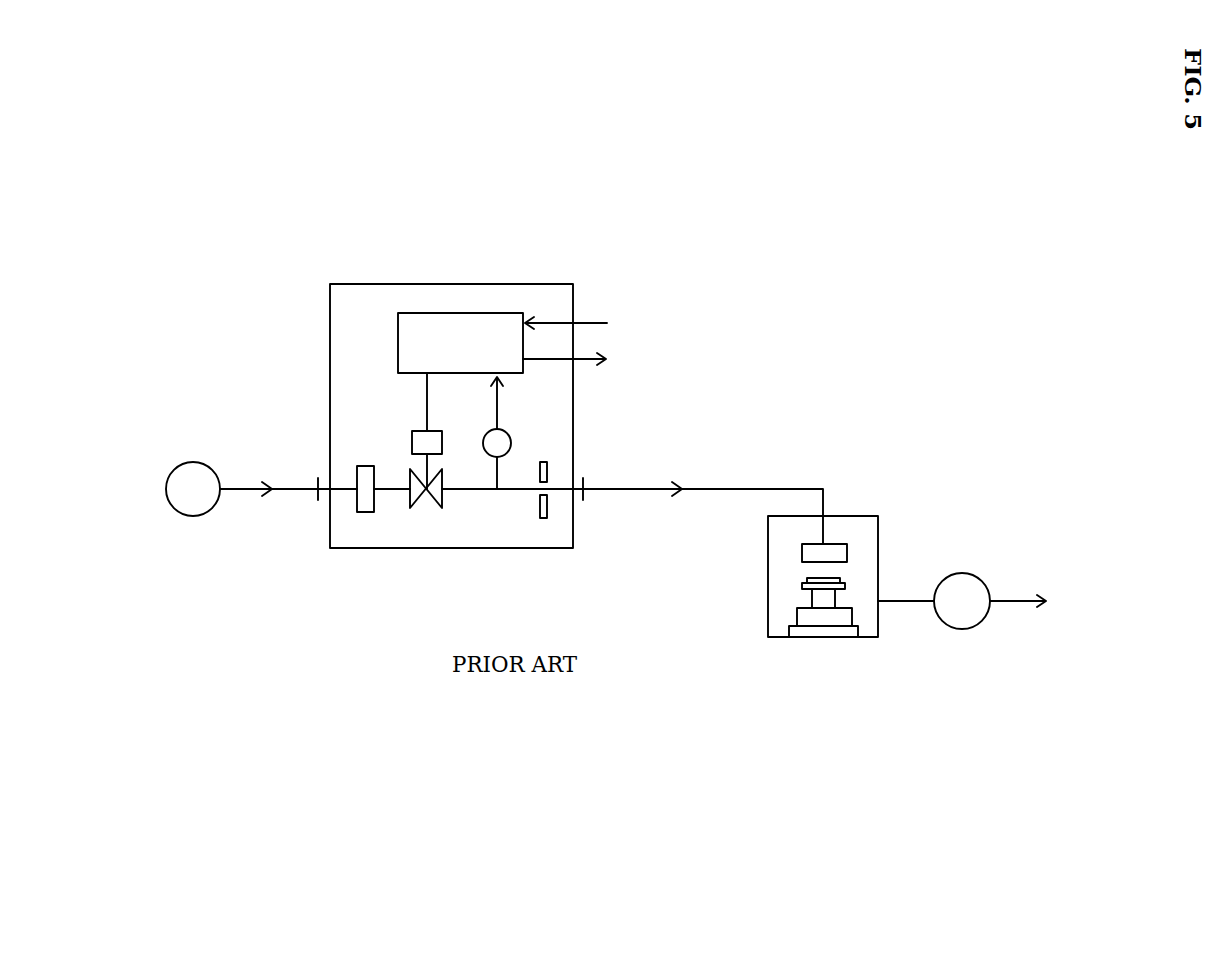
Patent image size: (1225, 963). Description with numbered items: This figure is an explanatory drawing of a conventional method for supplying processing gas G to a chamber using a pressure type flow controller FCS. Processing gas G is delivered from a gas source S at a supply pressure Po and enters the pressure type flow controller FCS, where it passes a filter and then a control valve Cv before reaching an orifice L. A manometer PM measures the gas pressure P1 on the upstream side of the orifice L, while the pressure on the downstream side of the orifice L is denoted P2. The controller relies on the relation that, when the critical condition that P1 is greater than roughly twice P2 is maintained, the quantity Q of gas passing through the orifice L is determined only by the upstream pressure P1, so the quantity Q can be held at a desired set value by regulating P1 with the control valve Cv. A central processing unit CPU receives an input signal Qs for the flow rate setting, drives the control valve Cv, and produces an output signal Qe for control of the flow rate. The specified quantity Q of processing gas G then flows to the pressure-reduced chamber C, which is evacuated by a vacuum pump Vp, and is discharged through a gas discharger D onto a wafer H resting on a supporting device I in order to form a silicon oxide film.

The gas source S is at (193, 489).
The processing gas G is at (270, 482).
The supply pressure Po is at (295, 489).
The pressure type flow controller FCS is at (464, 281).
The central processing unit CPU is at (460, 343).
The control valve Cv is at (422, 442).
The manometer PM is at (505, 445).
The orifice L is at (549, 471).
The gas pressure on the upstream side of the orifice P1 is at (513, 489).
The gas pressure on the downstream side of the orifice P2 is at (559, 489).
The input signal for a flow rate setting Qs is at (585, 323).
The output signal for control of the flow rate Qe is at (585, 361).
The quantity of processing gas Q is at (681, 482).
The chamber C is at (848, 514).
The gas discharger D is at (838, 550).
The wafer H is at (828, 580).
The supporting device I is at (820, 602).
The vacuum pump Vp is at (962, 601).